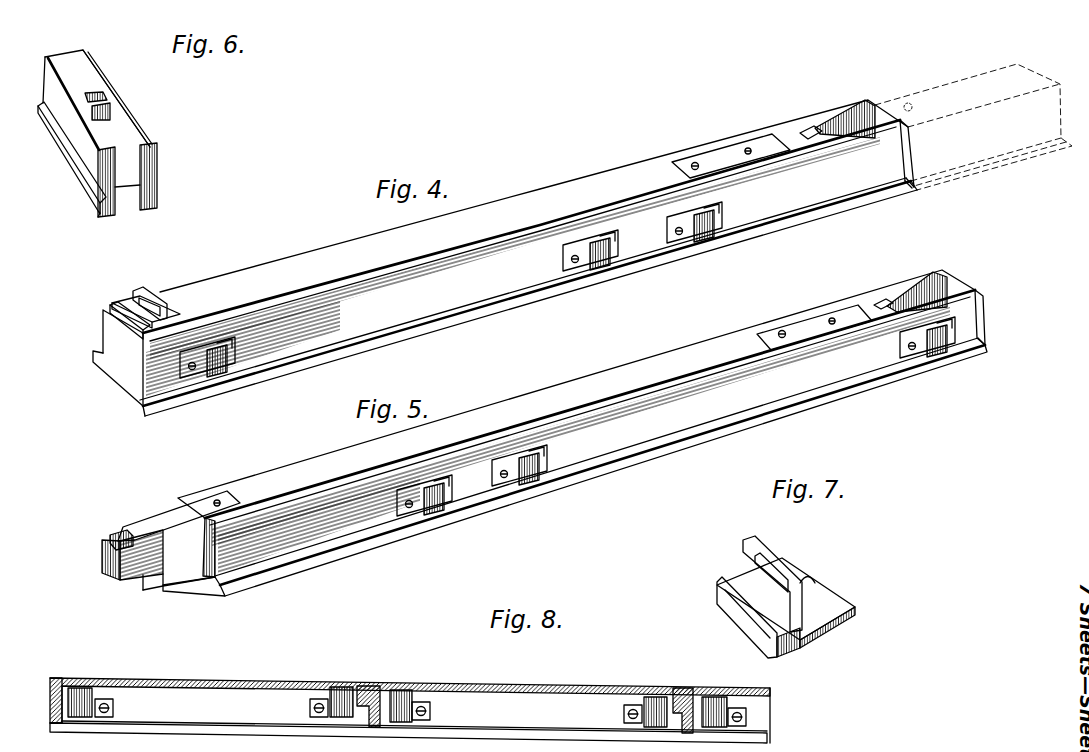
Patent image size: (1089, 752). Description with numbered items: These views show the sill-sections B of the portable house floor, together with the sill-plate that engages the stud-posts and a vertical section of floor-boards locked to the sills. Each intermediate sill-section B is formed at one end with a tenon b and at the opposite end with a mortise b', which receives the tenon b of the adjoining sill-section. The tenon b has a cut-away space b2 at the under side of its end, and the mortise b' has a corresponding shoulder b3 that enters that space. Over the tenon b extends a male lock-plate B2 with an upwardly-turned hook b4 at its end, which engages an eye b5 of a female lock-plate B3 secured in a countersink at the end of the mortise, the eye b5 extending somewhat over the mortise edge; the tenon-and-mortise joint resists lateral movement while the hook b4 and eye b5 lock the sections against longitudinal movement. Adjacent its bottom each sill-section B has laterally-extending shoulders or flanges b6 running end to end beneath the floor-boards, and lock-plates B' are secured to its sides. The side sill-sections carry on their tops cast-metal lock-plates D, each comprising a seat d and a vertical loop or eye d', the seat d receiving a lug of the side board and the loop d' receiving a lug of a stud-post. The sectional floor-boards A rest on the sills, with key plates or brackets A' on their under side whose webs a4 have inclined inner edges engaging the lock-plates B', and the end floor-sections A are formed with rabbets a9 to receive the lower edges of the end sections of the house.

In FIG. 4, the sill-section B is at (587, 235).
In FIG. 5, the sill-section B is at (581, 423).
In FIG. 6, the sill-section B is at (81, 133).
In FIG. 8, the sill-section B is at (414, 714).
In FIG. 4, the lock-plate B' is at (468, 305).
In FIG. 5, the lock-plate B' is at (676, 417).
In FIG. 8, the lock-plate B' is at (407, 707).
In FIG. 5, the male lock-plate B2 is at (152, 517).
In FIG. 4, the female lock-plate B3 is at (733, 116).
In FIG. 5, the female lock-plate B3 is at (810, 292).
In FIG. 6, the female lock-plate B3 is at (88, 77).
In FIG. 5, the tenon b is at (179, 598).
In FIG. 4, the mortise b' is at (859, 96).
In FIG. 5, the mortise b' is at (940, 281).
In FIG. 6, the mortise b' is at (153, 176).
In FIG. 5, the cut-away space b2 is at (136, 582).
In FIG. 6, the shoulder b3 is at (118, 138).
In FIG. 5, the hook b4 is at (112, 536).
In FIG. 4, the eye b5 is at (805, 128).
In FIG. 5, the eye b5 is at (873, 300).
In FIG. 6, the eye b5 is at (98, 98).
In FIG. 4, the laterally-extending shoulders or flanges b6 is at (94, 357).
In FIG. 5, the laterally-extending shoulders or flanges b6 is at (656, 446).
In FIG. 6, the laterally-extending shoulders or flanges b6 is at (76, 173).
In FIG. 8, the laterally-extending shoulders or flanges b6 is at (258, 734).
In FIG. 4, the lock-plate D is at (143, 289).
In FIG. 7, the lock-plate D is at (789, 603).
In FIG. 4, the seat d is at (111, 307).
In FIG. 7, the seat d is at (766, 624).
In FIG. 4, the vertical loop or eye d' is at (132, 289).
In FIG. 7, the vertical loop or eye d' is at (779, 575).
In FIG. 8, the sectional floor-board A is at (410, 698).
In FIG. 8, the key plate or bracket A' is at (385, 687).
In FIG. 8, the web a4 is at (362, 684).
In FIG. 8, the rabbet a9 is at (50, 680).